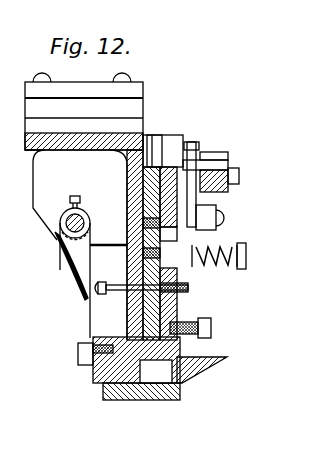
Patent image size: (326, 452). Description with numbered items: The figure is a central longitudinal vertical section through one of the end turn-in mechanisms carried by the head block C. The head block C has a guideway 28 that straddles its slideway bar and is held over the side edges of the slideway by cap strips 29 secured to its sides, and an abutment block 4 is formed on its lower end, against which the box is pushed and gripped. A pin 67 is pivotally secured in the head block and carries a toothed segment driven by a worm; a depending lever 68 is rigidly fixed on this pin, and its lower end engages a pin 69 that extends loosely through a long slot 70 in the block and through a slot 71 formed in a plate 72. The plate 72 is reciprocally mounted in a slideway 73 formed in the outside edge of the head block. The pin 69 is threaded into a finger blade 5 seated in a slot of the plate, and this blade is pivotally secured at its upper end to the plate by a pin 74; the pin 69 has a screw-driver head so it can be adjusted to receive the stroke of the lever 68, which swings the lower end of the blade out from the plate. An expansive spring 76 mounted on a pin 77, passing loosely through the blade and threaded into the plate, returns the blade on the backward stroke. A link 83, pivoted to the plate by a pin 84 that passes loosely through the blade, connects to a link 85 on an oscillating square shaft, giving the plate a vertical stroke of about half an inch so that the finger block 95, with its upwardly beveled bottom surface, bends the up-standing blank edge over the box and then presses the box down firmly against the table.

The abutment block 4 is at (150, 400).
The finger blade 5 is at (190, 305).
The guideway 28 is at (124, 113).
The cap strip 29 is at (146, 93).
The pin 67 is at (70, 230).
The depending lever 68 is at (70, 262).
The pin 69 is at (100, 292).
The long slot 70 is at (136, 312).
The slot 71 is at (188, 286).
The plate 72 is at (183, 390).
The slideway 73 is at (155, 143).
The pin 74 is at (192, 160).
The expansive spring 76 is at (222, 268).
The pin 77 is at (232, 250).
The link 83 is at (230, 190).
The pin 84 is at (205, 226).
The link 85 is at (232, 162).
The finger block 95 is at (212, 374).
The head block C is at (125, 322).